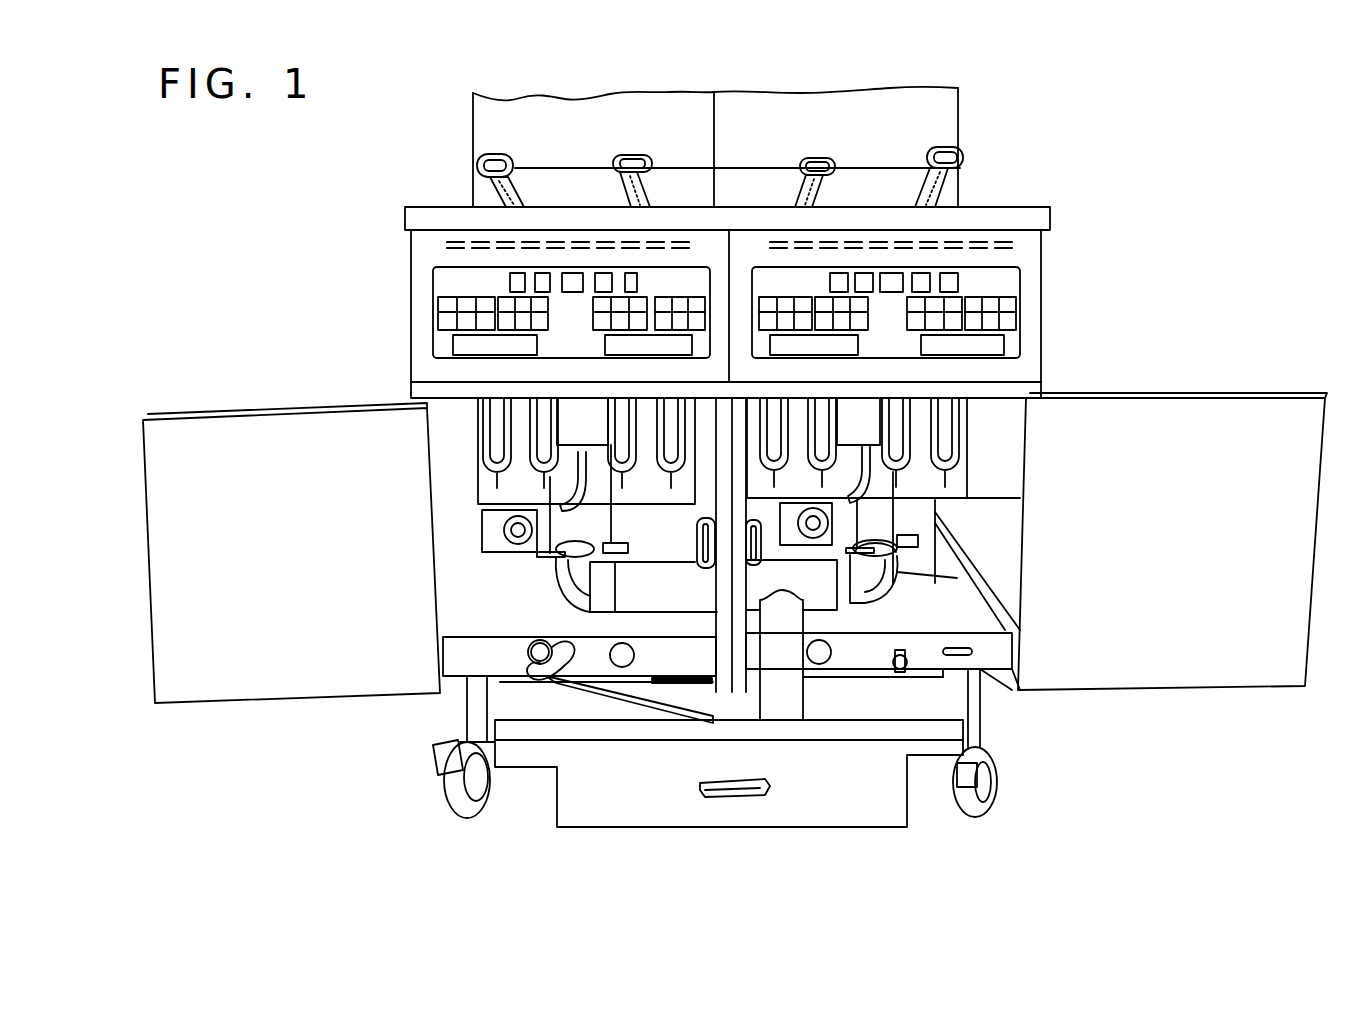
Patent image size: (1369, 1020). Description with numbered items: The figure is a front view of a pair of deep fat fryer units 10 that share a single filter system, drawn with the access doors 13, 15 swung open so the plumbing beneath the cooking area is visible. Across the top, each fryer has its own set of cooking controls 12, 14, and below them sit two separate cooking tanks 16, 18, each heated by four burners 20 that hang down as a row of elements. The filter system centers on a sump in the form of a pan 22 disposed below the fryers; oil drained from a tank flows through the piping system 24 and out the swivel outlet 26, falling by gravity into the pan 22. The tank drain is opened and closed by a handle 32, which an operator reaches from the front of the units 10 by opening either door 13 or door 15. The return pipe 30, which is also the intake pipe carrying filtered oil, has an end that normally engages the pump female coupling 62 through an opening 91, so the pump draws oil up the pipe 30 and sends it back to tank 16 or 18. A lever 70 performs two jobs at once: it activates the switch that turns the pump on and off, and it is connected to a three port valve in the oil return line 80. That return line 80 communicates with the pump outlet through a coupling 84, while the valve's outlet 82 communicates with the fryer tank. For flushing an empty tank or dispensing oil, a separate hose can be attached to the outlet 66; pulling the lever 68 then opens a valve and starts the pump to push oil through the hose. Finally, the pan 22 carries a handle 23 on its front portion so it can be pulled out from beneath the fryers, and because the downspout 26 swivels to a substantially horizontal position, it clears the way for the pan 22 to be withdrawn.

The deep fat fryer units 10 is at (1022, 130).
The cooking controls 12 is at (1014, 277).
The door 13 is at (1262, 414).
The cooking controls 14 is at (442, 281).
The door 15 is at (183, 433).
The cooking tank 16 is at (956, 476).
The cooking tank 18 is at (482, 487).
The burners 20 is at (664, 416).
The pan 22 is at (757, 812).
The handle 23 is at (703, 797).
The piping system 24 is at (865, 590).
The swivel outlet 26 is at (773, 708).
The return pipe 30 is at (585, 687).
The handle 32 is at (617, 523).
The pump female coupling 62 is at (543, 641).
The outlet 66 is at (890, 673).
The lever 68 is at (963, 650).
The lever 70 is at (558, 566).
The oil return line 80 is at (463, 640).
The outlet 82 is at (900, 650).
The coupling 84 is at (548, 663).
The opening 91 is at (634, 653).